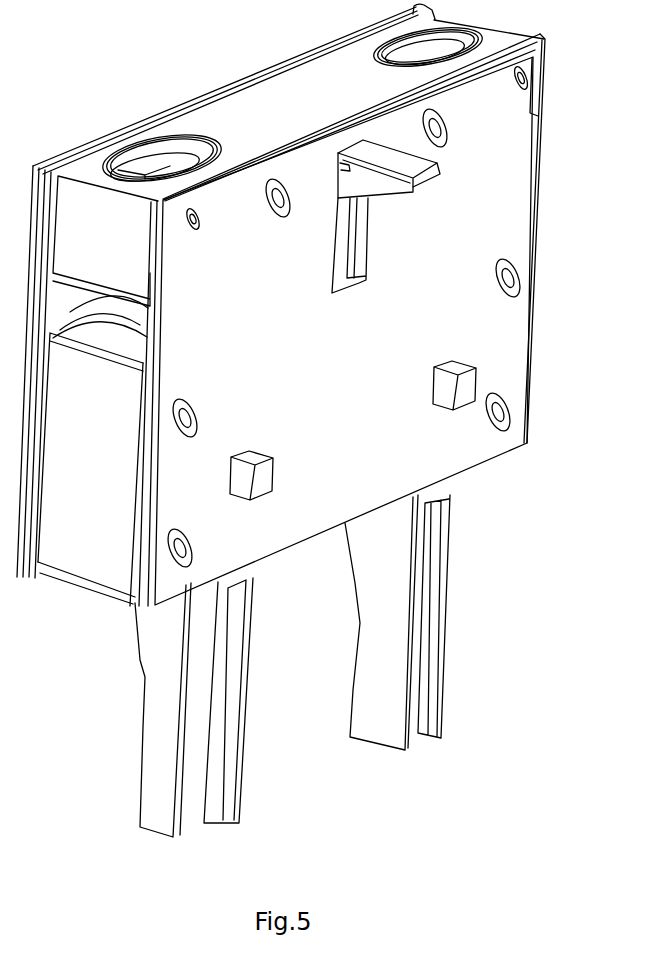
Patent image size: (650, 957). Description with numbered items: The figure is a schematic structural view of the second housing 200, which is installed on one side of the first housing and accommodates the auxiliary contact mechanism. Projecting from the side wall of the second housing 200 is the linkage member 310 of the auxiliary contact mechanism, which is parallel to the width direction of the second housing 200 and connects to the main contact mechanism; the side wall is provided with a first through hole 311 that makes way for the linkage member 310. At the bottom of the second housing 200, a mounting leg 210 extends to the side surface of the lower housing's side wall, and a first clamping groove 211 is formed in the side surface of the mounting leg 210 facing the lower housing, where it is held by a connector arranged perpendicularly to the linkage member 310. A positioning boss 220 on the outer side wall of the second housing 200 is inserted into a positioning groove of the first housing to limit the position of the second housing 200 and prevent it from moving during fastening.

The second housing 200 is at (262, 127).
The mounting leg 210 is at (157, 807).
The first clamping groove 211 is at (227, 790).
The positioning boss 220 is at (272, 495).
The linkage member 310 is at (380, 178).
The first through hole 311 is at (357, 284).